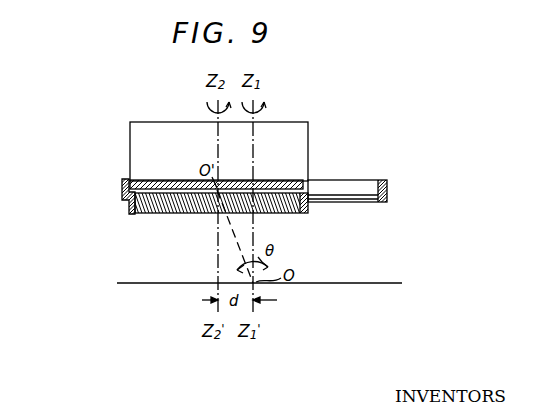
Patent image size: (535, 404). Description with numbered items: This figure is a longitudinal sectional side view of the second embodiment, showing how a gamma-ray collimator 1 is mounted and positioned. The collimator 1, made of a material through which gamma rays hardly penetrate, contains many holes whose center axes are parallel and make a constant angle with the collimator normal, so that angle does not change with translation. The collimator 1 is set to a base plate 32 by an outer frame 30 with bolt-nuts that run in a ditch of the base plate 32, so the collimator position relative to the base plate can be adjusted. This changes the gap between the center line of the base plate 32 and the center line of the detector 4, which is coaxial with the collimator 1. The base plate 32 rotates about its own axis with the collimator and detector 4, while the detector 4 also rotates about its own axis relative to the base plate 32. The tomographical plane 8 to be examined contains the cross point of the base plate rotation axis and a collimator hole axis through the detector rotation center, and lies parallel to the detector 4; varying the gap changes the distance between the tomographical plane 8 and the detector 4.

The collimator 1 is at (162, 209).
The detector 4 is at (150, 179).
The outer frame 30 is at (129, 205).
The base plate 32 is at (355, 180).
The tomographical plane 8 is at (366, 283).